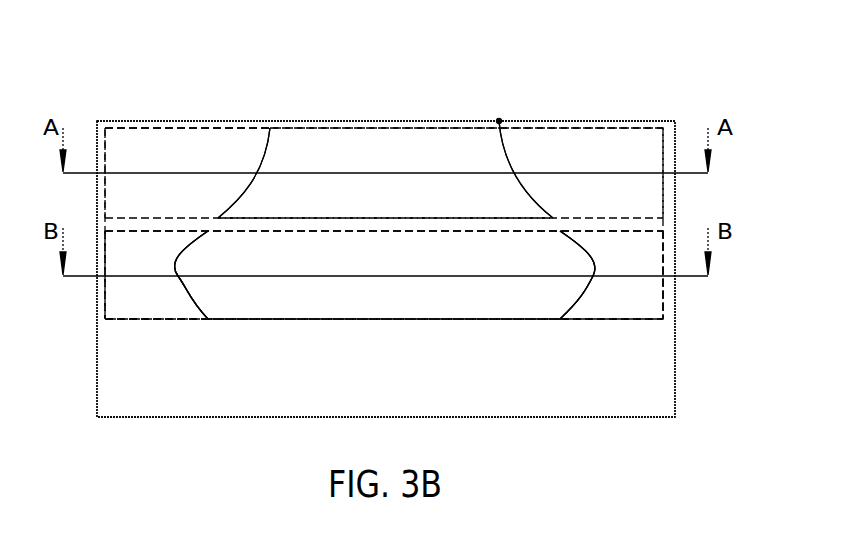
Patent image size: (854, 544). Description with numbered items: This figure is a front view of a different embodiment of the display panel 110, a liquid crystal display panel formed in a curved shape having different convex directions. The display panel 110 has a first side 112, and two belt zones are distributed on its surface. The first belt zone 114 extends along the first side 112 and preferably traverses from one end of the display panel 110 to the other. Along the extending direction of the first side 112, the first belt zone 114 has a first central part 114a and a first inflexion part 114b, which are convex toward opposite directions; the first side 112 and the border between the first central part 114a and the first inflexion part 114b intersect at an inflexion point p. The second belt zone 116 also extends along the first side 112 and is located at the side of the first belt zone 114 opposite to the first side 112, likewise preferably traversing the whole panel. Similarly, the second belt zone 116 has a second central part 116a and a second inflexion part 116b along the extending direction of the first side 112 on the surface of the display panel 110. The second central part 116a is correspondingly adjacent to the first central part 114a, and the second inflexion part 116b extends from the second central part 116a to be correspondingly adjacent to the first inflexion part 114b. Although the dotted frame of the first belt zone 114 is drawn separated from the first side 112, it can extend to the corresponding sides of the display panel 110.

The display panel 110 is at (101, 52).
The first side 112 is at (315, 121).
The first belt zone 114 is at (237, 125).
The first central part 114a is at (412, 145).
The first inflexion part 114b is at (150, 150).
The second belt zone 116 is at (304, 319).
The second central part 116a is at (503, 305).
The second inflexion part 116b is at (150, 305).
The inflexion point p is at (508, 108).